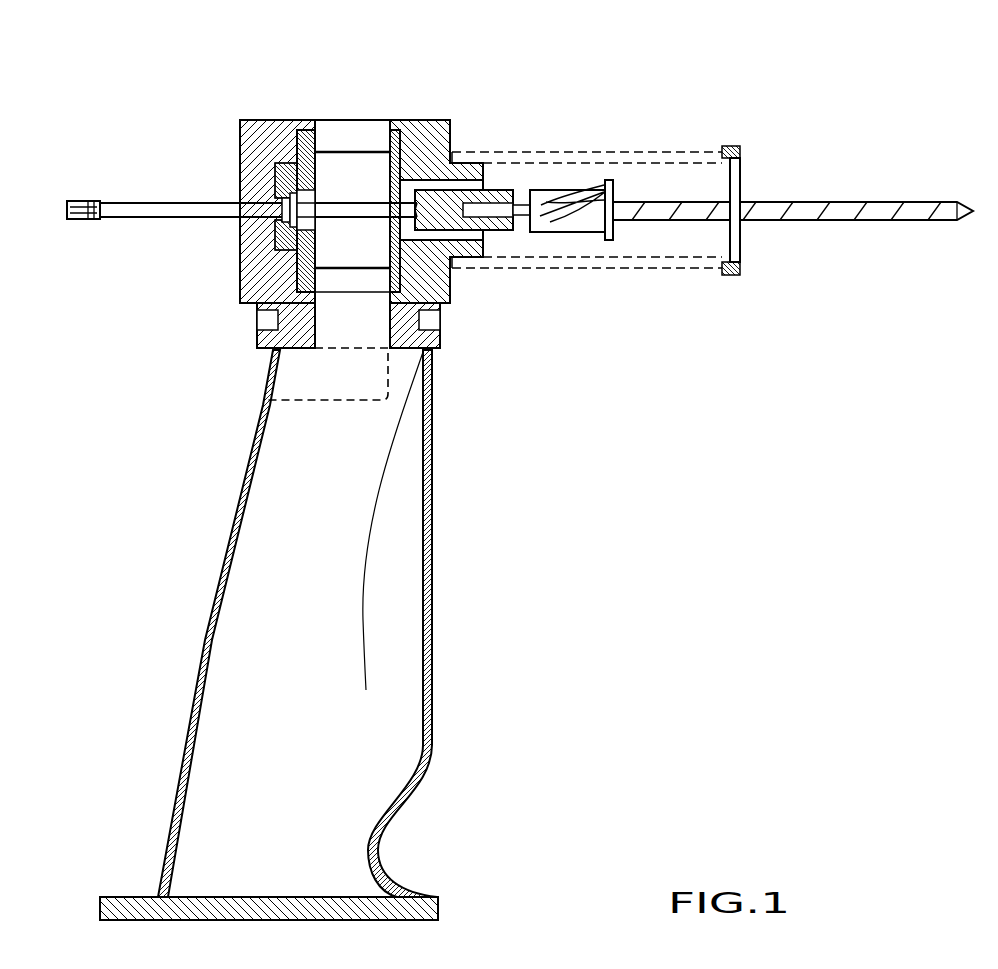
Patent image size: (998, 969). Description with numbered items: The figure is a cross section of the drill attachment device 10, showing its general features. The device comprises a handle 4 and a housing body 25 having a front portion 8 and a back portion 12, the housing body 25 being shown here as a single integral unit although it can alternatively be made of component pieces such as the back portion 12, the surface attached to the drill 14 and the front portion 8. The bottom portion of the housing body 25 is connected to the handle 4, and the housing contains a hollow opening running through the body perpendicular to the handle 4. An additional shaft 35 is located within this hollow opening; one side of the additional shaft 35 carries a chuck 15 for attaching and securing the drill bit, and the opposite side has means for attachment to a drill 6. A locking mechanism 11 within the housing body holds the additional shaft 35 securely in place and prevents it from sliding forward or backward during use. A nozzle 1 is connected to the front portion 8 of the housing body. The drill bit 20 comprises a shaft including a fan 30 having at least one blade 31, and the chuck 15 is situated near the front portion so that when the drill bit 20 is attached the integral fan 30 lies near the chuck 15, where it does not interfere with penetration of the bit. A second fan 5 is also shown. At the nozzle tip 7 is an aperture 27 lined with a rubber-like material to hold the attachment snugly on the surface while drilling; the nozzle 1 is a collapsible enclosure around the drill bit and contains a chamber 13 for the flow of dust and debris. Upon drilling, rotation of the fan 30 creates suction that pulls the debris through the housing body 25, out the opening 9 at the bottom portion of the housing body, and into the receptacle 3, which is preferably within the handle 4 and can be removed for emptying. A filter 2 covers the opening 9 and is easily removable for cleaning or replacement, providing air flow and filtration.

The nozzle 1 is at (622, 262).
The filter 2 is at (287, 383).
The receptacle 3 is at (317, 590).
The handle 4 is at (432, 538).
The second fan 5 is at (357, 152).
The means for attachment to drill chuck 6 is at (75, 219).
The nozzle tip 7 is at (736, 275).
The front portion housing body 8 is at (453, 280).
The opening from housing body into receptacle 9 is at (350, 345).
The drill attachment device 10 is at (486, 346).
The locking mechanism for additional shaft 11 is at (297, 180).
The back portion housing body 12 is at (260, 263).
The chamber within nozzle 13 is at (670, 247).
The back portion housing body attached to drill 14 is at (237, 138).
The chuck for drill bit 15 is at (513, 232).
The drill bit 20 is at (657, 195).
The housing body 25 is at (322, 120).
The nozzle aperture 27 is at (742, 252).
The fan 30 is at (605, 188).
The fan blade 31 is at (600, 188).
The additional shaft 35 is at (160, 210).